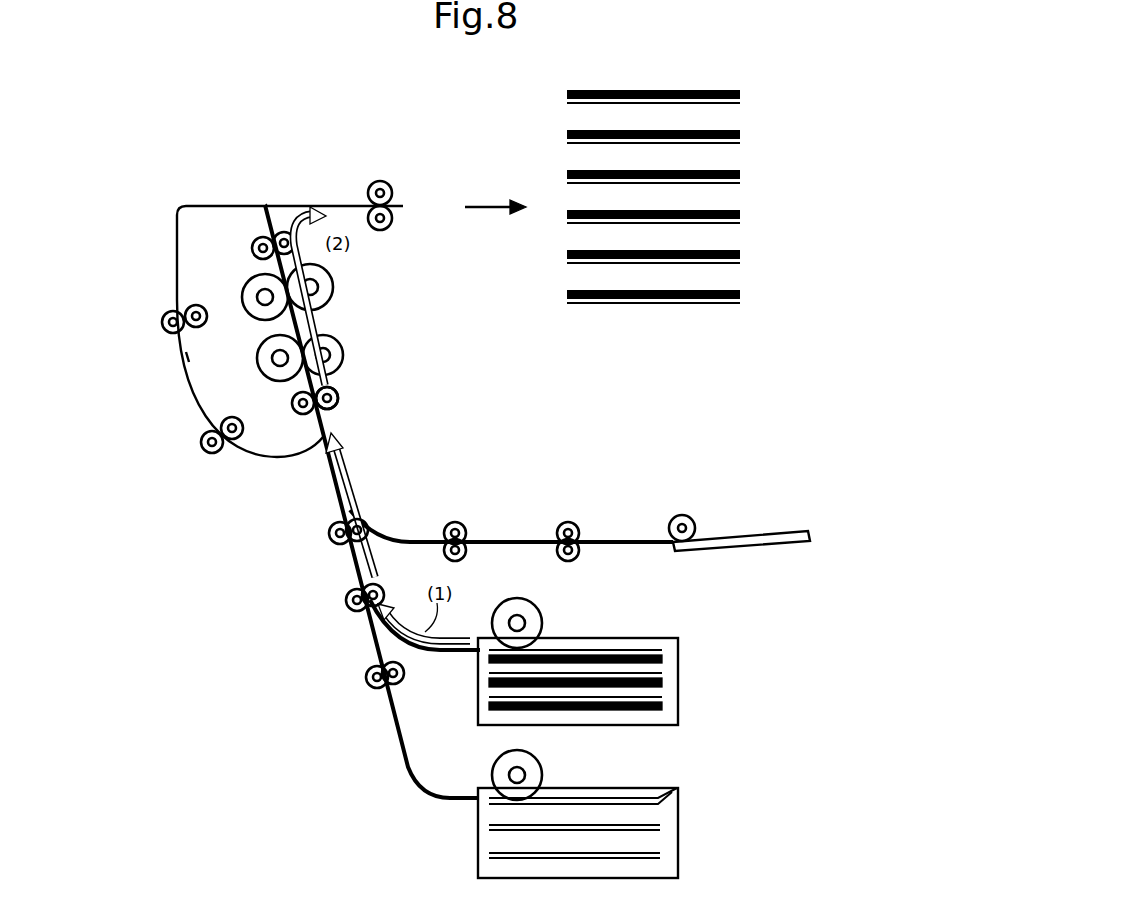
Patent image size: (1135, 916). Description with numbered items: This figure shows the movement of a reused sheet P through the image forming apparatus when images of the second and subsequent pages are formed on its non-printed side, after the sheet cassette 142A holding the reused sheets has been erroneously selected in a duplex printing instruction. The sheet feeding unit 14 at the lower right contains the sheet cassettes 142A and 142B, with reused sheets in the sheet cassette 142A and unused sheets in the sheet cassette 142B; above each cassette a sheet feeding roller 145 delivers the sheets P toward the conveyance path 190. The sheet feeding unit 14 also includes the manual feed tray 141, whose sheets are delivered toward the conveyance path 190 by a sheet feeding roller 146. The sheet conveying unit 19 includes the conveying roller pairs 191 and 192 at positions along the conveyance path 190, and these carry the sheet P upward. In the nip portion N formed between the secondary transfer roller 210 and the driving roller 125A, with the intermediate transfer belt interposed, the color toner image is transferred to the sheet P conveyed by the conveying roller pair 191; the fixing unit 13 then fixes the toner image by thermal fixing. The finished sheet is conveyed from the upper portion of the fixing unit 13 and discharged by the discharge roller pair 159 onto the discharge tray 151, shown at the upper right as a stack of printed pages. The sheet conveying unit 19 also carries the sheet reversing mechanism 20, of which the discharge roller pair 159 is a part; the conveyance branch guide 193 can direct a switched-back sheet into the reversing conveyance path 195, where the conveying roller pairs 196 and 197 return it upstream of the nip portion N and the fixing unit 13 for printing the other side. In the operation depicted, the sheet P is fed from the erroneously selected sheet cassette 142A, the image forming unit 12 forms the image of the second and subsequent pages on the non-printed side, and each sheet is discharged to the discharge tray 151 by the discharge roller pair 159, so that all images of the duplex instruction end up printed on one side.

The sheet reversing mechanism 20 is at (161, 243).
The conveyance branch guide 193 is at (266, 205).
The discharge roller pair 159 is at (391, 186).
The fixing unit 13 is at (234, 281).
The conveying roller pair 192 is at (308, 228).
The conveying roller pair 196 is at (164, 326).
The nip portion N is at (288, 333).
The driving roller 125A is at (336, 345).
The conveying roller pair 191 is at (338, 395).
The reversing conveyance path 195 is at (189, 360).
The secondary transfer roller 210 is at (262, 372).
The conveying roller pair 197 is at (202, 444).
The sheet conveying unit 19 is at (355, 401).
The conveyance path 190 is at (348, 465).
The sheet feeding roller 146 is at (695, 520).
The manual feed tray 141 is at (812, 536).
The image forming unit 12 is at (420, 297).
The sheet feeding roller 145 is at (543, 622).
The sheet cassette 142A is at (680, 685).
The sheet cassette 142B is at (680, 838).
The sheet P is at (662, 658).
The sheet feeding unit 14 is at (800, 733).
The discharge tray 151 is at (776, 128).